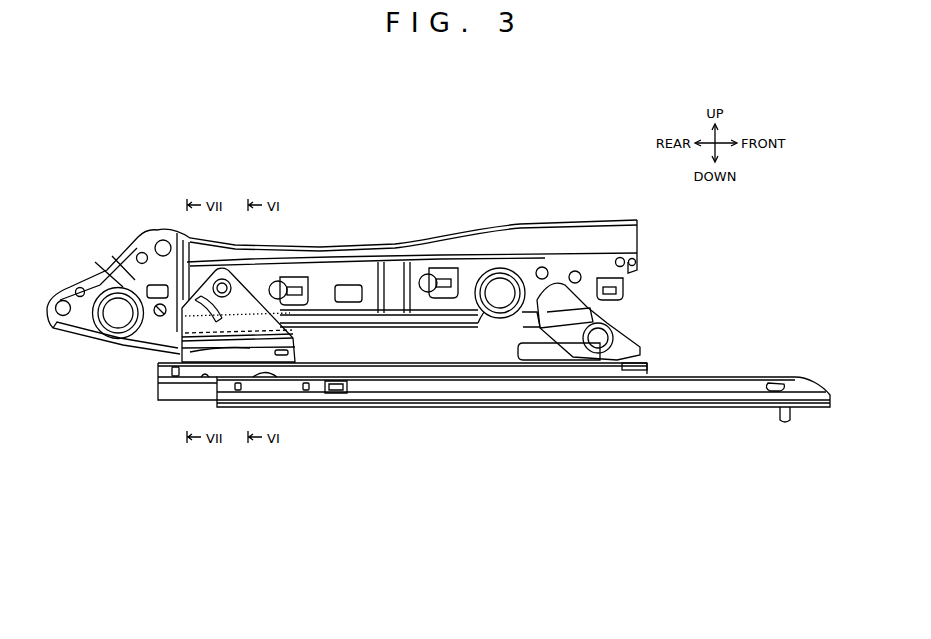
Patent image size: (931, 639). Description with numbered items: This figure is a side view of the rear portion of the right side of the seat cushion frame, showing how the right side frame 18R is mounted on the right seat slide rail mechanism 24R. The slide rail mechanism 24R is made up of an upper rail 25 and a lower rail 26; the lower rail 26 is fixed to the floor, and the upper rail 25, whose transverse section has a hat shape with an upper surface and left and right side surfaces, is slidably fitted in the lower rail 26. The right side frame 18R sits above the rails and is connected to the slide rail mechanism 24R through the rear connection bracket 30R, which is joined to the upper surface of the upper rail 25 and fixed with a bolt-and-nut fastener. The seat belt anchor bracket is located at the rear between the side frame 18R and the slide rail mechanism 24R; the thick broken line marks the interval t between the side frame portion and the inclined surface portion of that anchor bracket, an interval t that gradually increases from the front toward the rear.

The right side frame 18R is at (335, 256).
The interval t is at (183, 344).
The rear connection bracket 30R is at (593, 314).
The right seat slide rail mechanism 24R is at (494, 415).
The upper rail 25 is at (402, 372).
The lower rail 26 is at (495, 388).